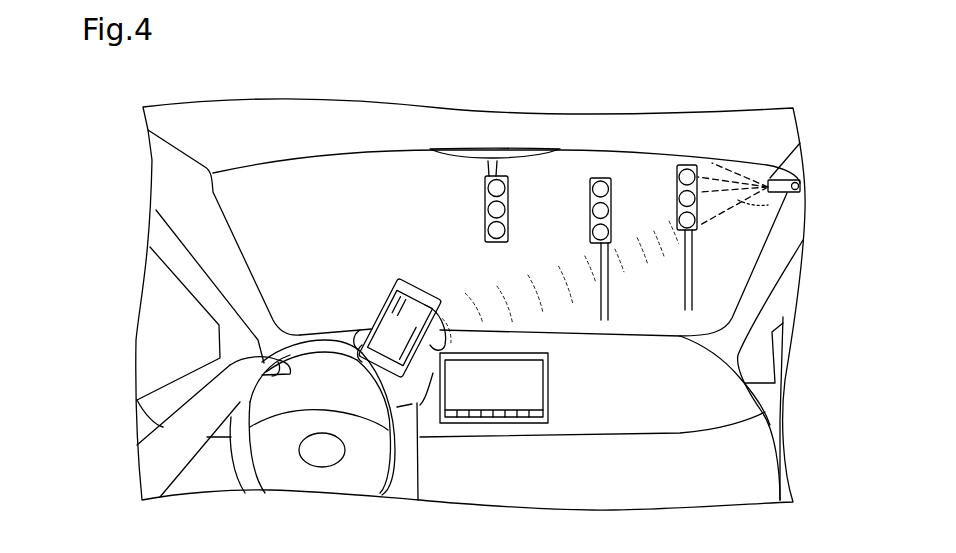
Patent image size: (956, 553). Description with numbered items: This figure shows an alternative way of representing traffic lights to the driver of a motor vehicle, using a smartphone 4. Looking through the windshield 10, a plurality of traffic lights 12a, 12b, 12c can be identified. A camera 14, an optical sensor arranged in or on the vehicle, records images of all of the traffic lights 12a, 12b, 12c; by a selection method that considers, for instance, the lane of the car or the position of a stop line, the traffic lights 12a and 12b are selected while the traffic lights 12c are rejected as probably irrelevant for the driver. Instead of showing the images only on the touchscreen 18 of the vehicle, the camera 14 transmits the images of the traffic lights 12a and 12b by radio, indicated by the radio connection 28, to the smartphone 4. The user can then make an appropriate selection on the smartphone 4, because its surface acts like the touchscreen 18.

The windshield 10 is at (414, 186).
The traffic lights 12a is at (492, 176).
The traffic lights 12b is at (588, 178).
The traffic lights 12c is at (672, 163).
The camera 14 is at (766, 174).
The smartphone 4 is at (412, 288).
The radio connection 28 is at (535, 294).
The touchscreen 18 is at (548, 385).